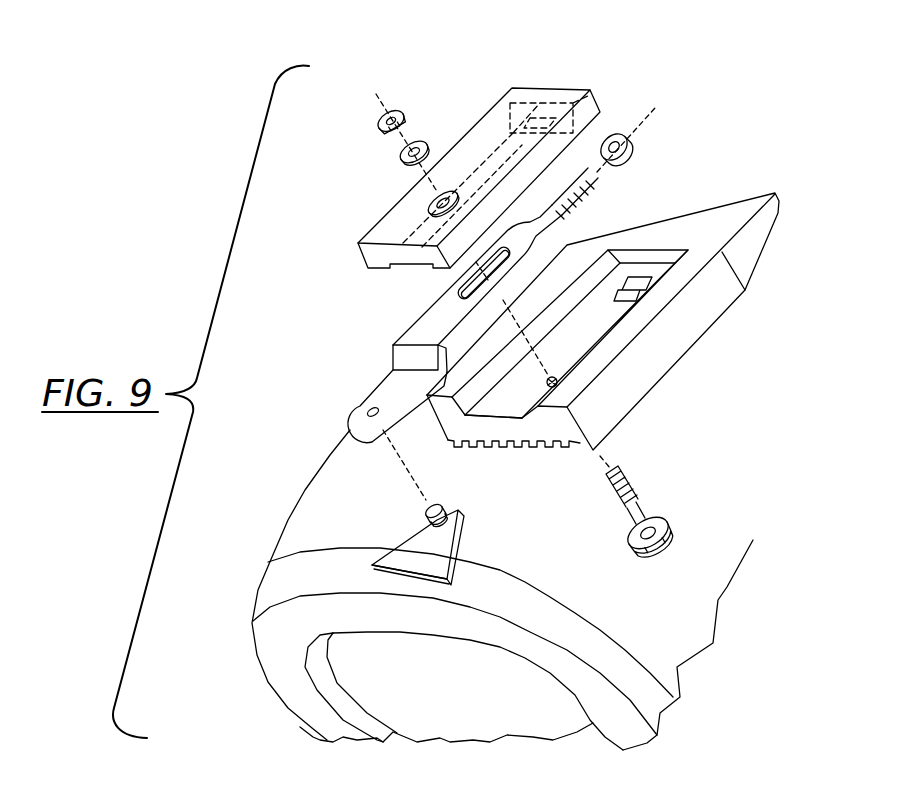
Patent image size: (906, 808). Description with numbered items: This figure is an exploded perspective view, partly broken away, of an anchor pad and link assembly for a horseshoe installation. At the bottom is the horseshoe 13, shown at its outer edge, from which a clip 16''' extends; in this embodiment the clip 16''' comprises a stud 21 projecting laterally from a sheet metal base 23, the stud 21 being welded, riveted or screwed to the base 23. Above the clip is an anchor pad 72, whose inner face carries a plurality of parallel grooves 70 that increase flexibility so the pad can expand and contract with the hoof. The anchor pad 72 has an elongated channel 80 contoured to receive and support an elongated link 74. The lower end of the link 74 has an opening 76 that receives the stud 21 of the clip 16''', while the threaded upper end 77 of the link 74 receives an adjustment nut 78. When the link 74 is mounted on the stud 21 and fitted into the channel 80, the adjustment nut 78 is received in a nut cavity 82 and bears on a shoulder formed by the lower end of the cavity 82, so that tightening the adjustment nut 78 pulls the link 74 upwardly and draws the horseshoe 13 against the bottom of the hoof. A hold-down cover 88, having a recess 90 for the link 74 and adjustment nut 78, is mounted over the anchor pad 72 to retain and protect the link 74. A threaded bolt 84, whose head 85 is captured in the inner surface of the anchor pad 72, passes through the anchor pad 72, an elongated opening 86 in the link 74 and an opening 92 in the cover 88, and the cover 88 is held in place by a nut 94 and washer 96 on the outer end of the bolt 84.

The outer edge 13 is at (262, 591).
The clip 16''' is at (452, 547).
The stud 21 is at (427, 508).
The sheet metal base 23 is at (412, 549).
The grooves 70 is at (488, 440).
The anchor pad 72 is at (597, 344).
The link 74 is at (469, 275).
The opening 76 is at (366, 410).
The upper end 77 is at (582, 191).
The adjustment nut 78 is at (636, 146).
The channel 80 is at (522, 413).
The nut cavity 82 is at (641, 280).
The threaded bolt 84 is at (620, 497).
The head 85 is at (669, 527).
The elongated opening 86 is at (458, 284).
The hold-down cover 88 is at (358, 243).
The recess 90 is at (502, 97).
The opening 92 is at (428, 206).
The nut 94 is at (382, 117).
The washer 96 is at (400, 155).